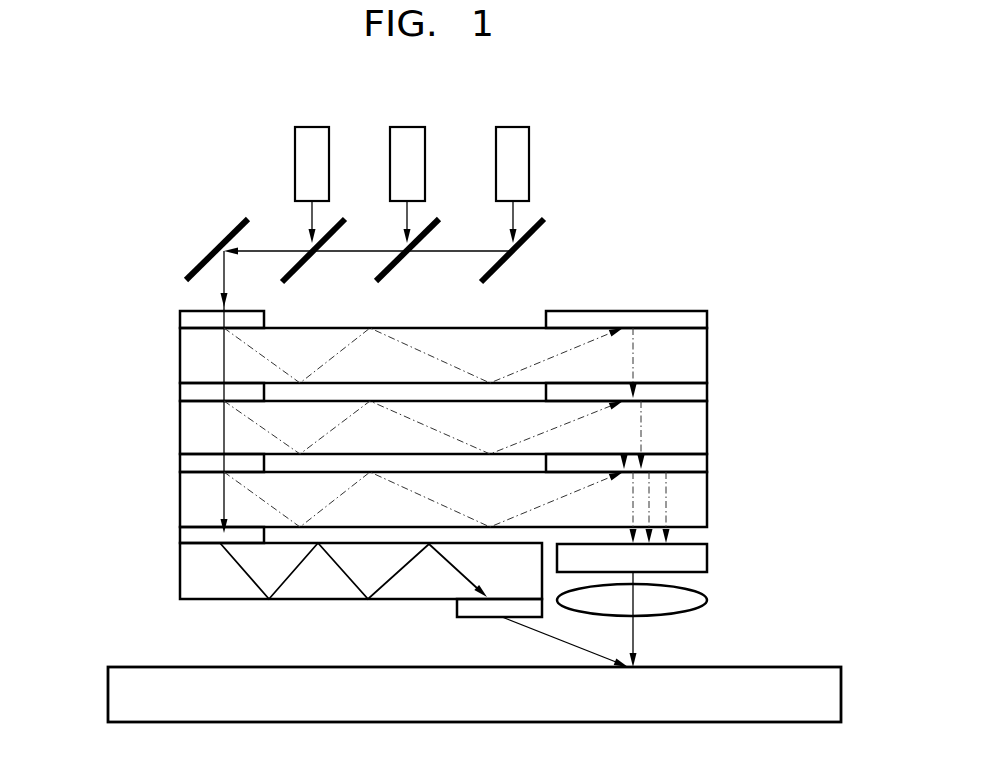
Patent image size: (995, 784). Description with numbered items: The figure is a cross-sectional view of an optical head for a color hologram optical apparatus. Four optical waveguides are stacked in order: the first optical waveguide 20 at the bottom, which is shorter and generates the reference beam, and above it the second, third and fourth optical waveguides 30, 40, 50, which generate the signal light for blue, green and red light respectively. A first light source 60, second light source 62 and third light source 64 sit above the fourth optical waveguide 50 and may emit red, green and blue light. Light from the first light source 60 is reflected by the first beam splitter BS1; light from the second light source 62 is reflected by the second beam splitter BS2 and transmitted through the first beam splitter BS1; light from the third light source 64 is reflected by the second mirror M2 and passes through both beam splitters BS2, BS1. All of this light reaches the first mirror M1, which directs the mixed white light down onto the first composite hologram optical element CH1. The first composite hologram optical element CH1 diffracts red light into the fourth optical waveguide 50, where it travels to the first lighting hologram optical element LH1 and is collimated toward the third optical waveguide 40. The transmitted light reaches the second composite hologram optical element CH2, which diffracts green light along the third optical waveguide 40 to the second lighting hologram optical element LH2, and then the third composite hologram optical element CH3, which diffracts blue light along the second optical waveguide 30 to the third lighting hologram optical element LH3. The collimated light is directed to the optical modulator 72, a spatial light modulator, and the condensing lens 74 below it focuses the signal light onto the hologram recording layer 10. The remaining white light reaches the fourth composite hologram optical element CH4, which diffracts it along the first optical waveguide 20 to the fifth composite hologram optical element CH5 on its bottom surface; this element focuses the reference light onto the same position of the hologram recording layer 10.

The hologram recording layer 10 is at (123, 693).
The first optical waveguide 20 is at (192, 570).
The second optical waveguide 30 is at (192, 497).
The third optical waveguide 40 is at (192, 428).
The fourth optical waveguide 50 is at (192, 355).
The first light source 60 is at (313, 138).
The second light source 62 is at (407, 138).
The third light source 64 is at (513, 138).
The optical modulator 72 is at (697, 557).
The condensing lens 74 is at (692, 606).
The first composite hologram optical element CH1 is at (187, 319).
The second composite hologram optical element CH2 is at (187, 393).
The third composite hologram optical element CH3 is at (187, 463).
The fourth composite hologram optical element CH4 is at (187, 533).
The fifth composite hologram optical element CH5 is at (468, 611).
The first lighting hologram optical element LH1 is at (690, 318).
The second lighting hologram optical element LH2 is at (690, 392).
The third lighting hologram optical element LH3 is at (692, 464).
The first mirror M1 is at (238, 225).
The second mirror M2 is at (498, 270).
The first beam splitter BS1 is at (302, 268).
The second beam splitter BS2 is at (395, 270).